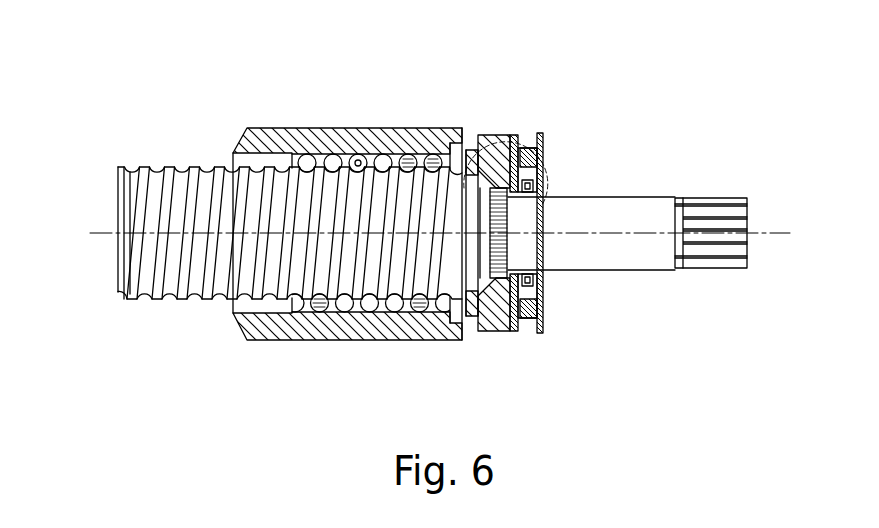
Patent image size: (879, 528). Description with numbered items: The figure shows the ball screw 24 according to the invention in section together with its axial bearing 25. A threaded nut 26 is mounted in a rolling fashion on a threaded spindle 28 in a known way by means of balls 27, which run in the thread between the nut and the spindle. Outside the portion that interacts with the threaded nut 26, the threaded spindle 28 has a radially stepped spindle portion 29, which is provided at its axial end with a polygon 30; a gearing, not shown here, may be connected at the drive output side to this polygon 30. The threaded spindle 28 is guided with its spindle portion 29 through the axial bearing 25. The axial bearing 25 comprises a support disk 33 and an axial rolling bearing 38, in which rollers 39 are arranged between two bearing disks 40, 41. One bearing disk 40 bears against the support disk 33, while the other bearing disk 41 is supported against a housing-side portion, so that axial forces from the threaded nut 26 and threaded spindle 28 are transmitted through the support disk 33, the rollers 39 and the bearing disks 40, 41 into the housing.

The ball screw 24 is at (242, 113).
The axial bearing 25 is at (550, 206).
The threaded nut 26 is at (312, 152).
The balls 27 is at (360, 159).
The threaded spindle 28 is at (118, 202).
The spindle portion 29 is at (585, 208).
The polygon 30 is at (710, 227).
The support disk 33 is at (502, 135).
The axial rolling bearing 38 is at (550, 248).
The rollers 39 is at (548, 152).
The bearing disk 40 is at (515, 332).
The bearing disk 41 is at (540, 333).